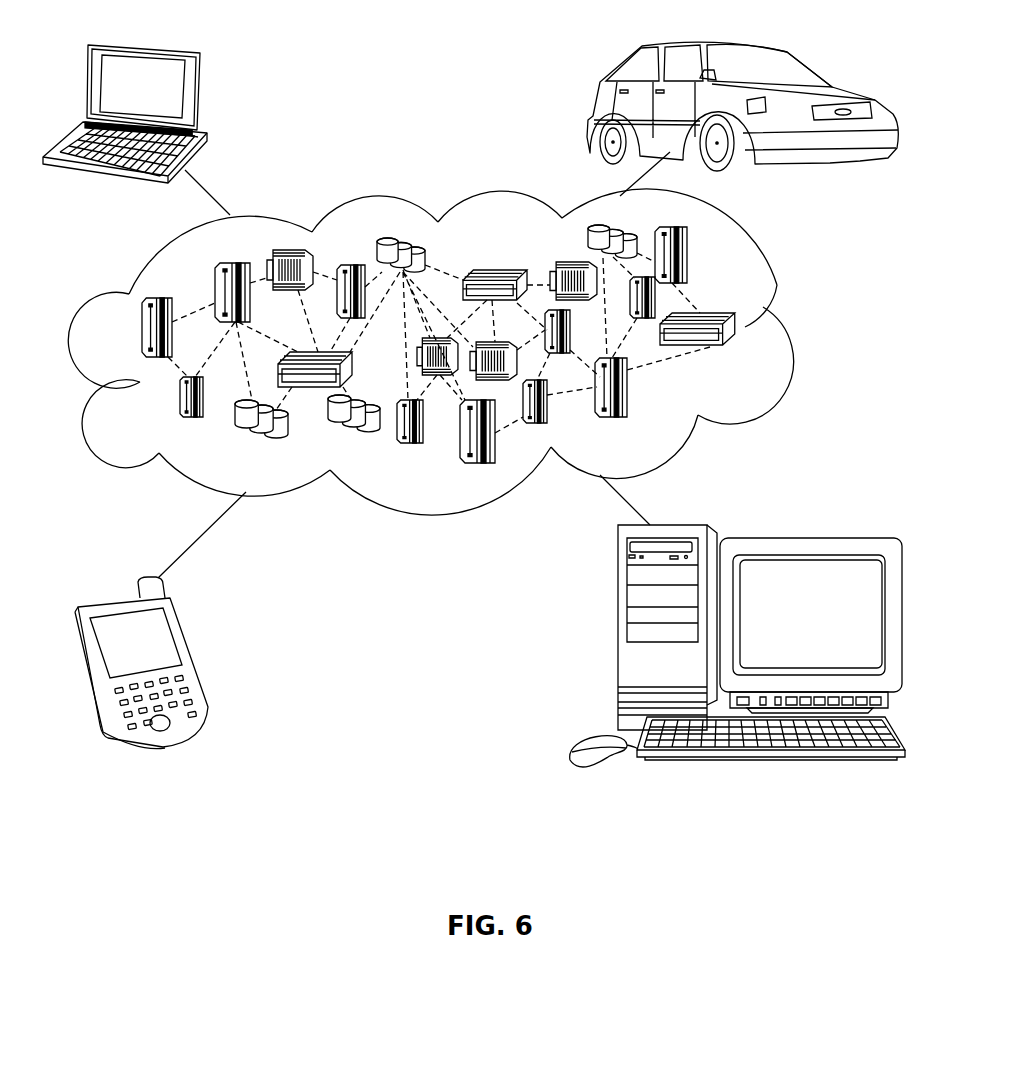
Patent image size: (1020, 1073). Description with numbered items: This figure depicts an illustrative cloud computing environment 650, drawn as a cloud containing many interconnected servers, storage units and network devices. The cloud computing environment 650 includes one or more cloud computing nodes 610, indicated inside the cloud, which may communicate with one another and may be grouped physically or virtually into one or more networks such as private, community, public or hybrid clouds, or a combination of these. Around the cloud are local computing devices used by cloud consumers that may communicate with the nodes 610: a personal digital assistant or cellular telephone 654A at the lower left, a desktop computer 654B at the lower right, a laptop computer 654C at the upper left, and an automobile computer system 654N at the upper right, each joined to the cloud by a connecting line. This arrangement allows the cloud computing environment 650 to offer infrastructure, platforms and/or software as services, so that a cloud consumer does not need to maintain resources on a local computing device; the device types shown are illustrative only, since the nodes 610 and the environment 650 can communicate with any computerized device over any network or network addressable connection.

The cloud computing nodes 610 is at (475, 404).
The cloud computing environment 650 is at (773, 290).
The personal digital assistant (PDA) or cellular telephone 654A is at (192, 660).
The desktop computer 654B is at (617, 635).
The laptop computer 654C is at (200, 93).
The automobile computer system 654N is at (593, 98).